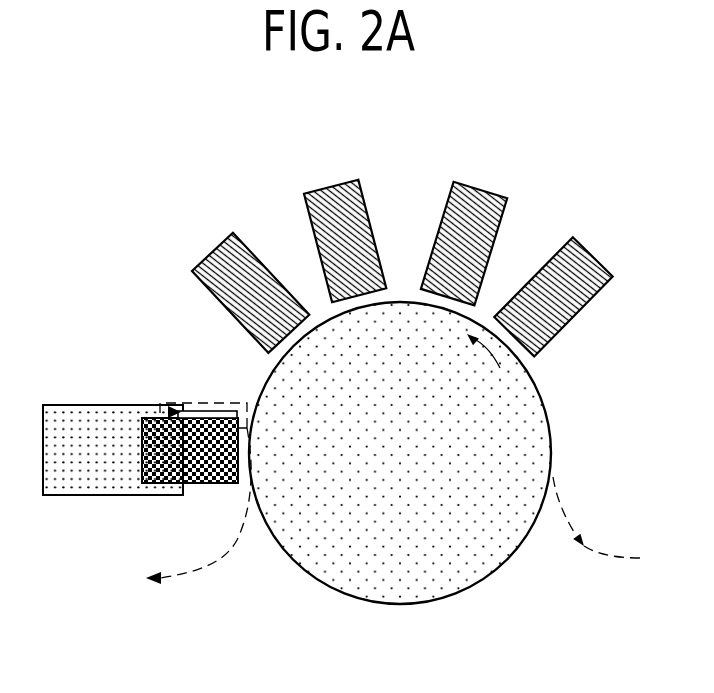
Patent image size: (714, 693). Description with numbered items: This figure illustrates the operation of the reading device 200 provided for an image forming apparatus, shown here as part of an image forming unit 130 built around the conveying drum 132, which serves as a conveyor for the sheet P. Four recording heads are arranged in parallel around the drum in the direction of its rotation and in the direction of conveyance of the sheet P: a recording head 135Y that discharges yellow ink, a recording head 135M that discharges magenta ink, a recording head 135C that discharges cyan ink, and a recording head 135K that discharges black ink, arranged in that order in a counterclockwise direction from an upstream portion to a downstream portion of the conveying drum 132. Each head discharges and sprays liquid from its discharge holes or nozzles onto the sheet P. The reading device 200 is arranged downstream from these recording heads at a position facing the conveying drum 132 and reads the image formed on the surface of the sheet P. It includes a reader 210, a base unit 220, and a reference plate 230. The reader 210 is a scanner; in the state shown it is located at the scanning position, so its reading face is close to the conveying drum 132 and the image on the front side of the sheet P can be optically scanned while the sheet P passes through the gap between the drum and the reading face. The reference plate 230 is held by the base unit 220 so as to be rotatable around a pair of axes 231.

The image forming unit 130 is at (558, 204).
The conveying drum 132 is at (533, 421).
The recording head 135K is at (218, 257).
The recording head 135C is at (332, 188).
The recording head 135M is at (480, 200).
The recording head 135Y is at (585, 258).
The reading device 200 is at (82, 510).
The reader 210 is at (207, 484).
The base unit 220 is at (84, 412).
The reference plate 230 is at (228, 414).
The axes 231 is at (175, 410).
The sheet P is at (603, 561).